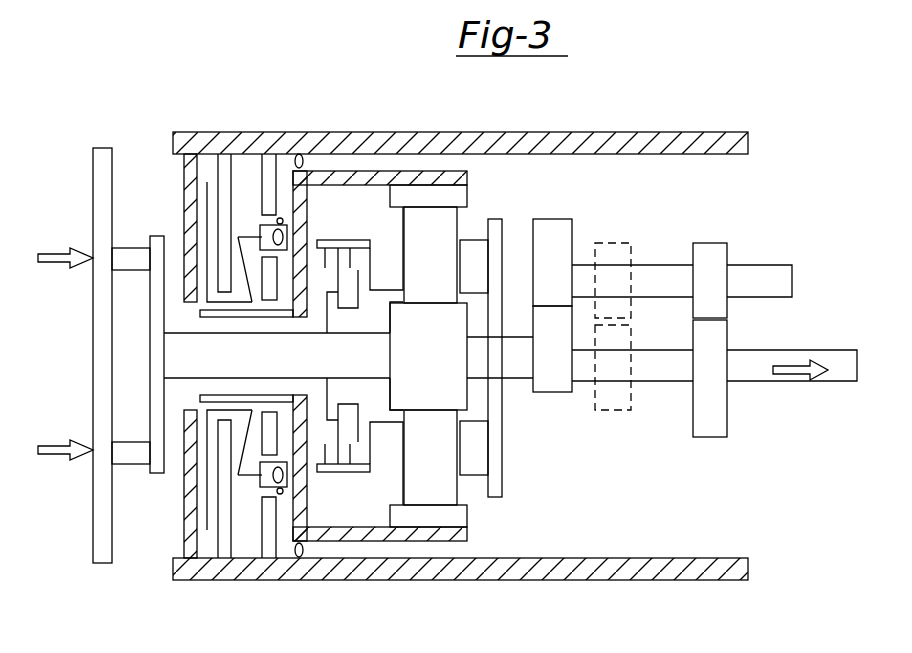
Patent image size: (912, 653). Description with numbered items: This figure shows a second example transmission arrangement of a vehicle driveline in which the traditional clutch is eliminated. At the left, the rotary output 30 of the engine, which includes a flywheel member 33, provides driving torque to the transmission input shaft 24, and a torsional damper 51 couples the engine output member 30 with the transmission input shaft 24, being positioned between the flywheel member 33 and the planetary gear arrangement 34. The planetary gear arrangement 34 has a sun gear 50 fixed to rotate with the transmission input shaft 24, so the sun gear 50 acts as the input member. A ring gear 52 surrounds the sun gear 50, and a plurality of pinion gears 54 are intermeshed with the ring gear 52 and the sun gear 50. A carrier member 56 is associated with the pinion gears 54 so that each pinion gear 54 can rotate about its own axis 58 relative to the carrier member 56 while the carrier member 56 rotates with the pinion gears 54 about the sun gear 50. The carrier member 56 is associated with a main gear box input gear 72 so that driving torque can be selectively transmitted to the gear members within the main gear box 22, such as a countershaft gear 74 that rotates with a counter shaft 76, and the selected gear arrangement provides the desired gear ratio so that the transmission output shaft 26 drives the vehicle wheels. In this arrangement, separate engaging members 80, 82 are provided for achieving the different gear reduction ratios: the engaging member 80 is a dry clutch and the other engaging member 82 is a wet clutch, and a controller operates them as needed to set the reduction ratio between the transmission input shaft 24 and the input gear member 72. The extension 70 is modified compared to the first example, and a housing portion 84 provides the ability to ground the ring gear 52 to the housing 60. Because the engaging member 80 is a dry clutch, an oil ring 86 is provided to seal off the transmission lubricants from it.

The main gear box 22 is at (703, 205).
The transmission input shaft 24 is at (163, 353).
The transmission output shaft 26 is at (765, 370).
The rotary output 30 is at (102, 556).
The flywheel member 33 is at (98, 478).
The planetary gear arrangement 34 is at (402, 124).
The sun gear 50 is at (440, 376).
The torsional damper 51 is at (142, 452).
The ring gear 52 is at (457, 197).
The pinion gears 54 is at (440, 277).
The carrier member 56 is at (497, 463).
The axis 58 is at (486, 277).
The housing 60 is at (252, 132).
The extension 70 is at (268, 318).
The main gear box input gear 72 is at (551, 385).
The countershaft gear 74 is at (553, 230).
The counter shaft 76 is at (753, 278).
The engaging member 80 is at (238, 306).
The engaging member 82 is at (340, 262).
The housing portion 84 is at (187, 178).
The oil ring 86 is at (310, 158).